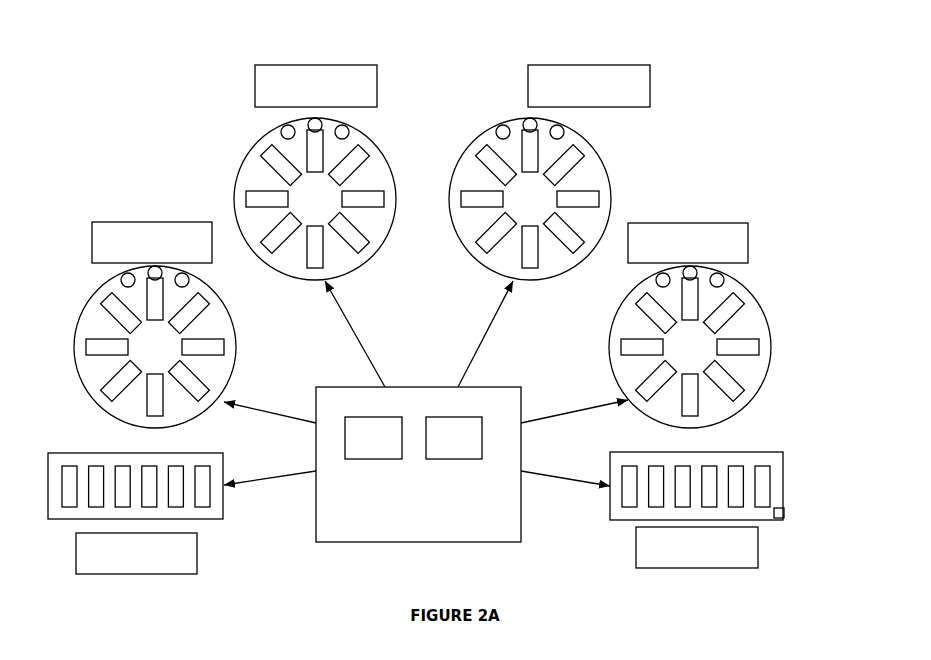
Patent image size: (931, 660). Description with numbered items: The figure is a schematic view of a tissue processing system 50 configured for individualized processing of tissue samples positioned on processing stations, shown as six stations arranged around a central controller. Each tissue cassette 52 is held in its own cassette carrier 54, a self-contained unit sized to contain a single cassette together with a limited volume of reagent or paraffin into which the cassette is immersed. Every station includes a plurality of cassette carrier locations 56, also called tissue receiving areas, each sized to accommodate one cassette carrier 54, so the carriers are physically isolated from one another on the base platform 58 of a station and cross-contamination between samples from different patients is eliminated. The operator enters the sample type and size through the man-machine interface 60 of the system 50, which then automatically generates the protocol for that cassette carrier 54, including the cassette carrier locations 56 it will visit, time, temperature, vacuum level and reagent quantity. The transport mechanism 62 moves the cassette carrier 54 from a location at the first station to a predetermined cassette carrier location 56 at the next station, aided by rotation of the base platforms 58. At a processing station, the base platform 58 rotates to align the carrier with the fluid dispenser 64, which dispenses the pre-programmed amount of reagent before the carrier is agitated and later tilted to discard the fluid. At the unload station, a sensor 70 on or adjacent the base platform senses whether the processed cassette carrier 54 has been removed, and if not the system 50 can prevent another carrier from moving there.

The tissue processing system 50 is at (455, 45).
The tissue cassette 52 is at (254, 344).
The cassette carrier 54 is at (254, 344).
The cassette carrier location 56 is at (226, 341).
The base platform 58 is at (77, 367).
The man-machine interface 60 is at (373, 438).
The transport mechanism 62 is at (454, 438).
The fluid dispenser 64 is at (120, 280).
The sensor 70 is at (786, 512).